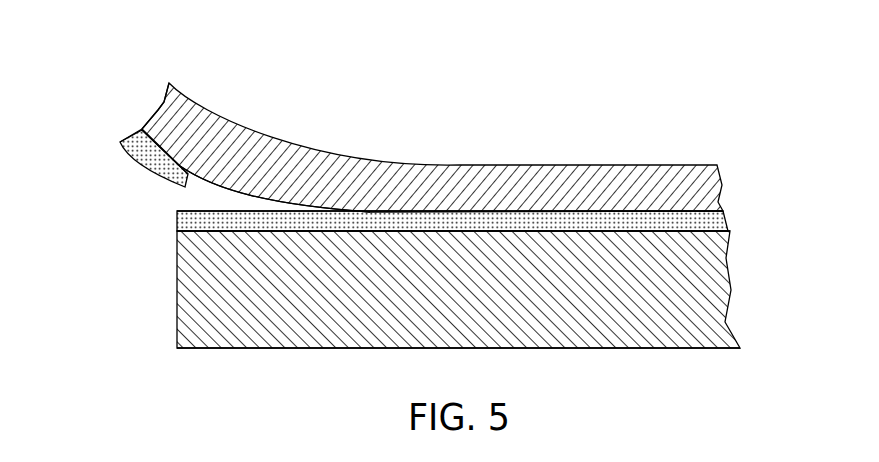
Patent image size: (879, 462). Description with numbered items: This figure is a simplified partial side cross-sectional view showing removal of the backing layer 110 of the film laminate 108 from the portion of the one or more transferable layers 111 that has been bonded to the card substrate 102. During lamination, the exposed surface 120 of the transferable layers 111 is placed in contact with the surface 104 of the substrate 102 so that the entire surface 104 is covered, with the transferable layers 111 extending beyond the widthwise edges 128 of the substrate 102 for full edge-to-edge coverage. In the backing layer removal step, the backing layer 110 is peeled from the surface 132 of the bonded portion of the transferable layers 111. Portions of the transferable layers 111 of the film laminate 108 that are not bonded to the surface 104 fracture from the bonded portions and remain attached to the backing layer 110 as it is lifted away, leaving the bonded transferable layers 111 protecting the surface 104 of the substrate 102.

The card substrate 102 is at (178, 262).
The surface 104 is at (587, 217).
The film laminate 108 is at (119, 79).
The backing layer 110 is at (218, 120).
The transferable layers 111 is at (720, 222).
The exposed surface 120 is at (116, 162).
The widthwise edges 128 is at (177, 316).
The surface 132 is at (268, 198).